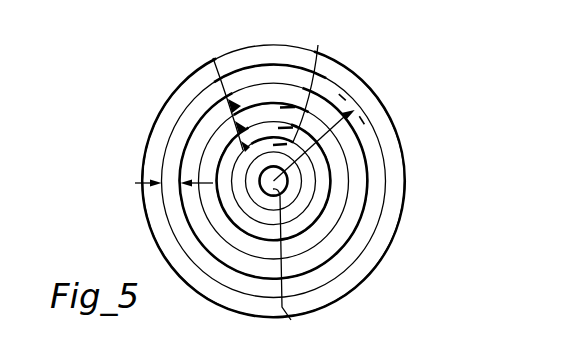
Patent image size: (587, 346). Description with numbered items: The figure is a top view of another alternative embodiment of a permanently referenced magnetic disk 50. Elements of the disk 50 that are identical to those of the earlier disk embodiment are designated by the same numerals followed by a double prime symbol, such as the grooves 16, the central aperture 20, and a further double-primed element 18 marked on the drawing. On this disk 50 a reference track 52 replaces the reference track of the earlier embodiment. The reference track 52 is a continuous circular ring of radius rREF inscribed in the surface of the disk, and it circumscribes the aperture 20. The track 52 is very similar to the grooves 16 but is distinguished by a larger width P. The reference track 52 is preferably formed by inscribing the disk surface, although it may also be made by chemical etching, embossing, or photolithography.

The permanently referenced magnetic disk 50 is at (352, 296).
The reference track 52 is at (374, 203).
The grooves 16 is at (221, 89).
The second radial reference line (18'') 18 is at (310, 84).
The aperture 20 is at (289, 266).
The width of reference track P is at (174, 184).
The radius of reference track rREF is at (335, 124).